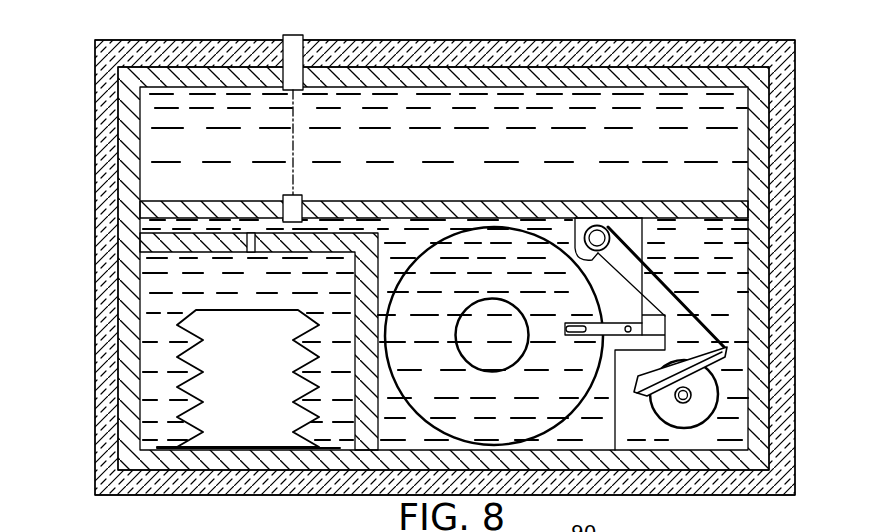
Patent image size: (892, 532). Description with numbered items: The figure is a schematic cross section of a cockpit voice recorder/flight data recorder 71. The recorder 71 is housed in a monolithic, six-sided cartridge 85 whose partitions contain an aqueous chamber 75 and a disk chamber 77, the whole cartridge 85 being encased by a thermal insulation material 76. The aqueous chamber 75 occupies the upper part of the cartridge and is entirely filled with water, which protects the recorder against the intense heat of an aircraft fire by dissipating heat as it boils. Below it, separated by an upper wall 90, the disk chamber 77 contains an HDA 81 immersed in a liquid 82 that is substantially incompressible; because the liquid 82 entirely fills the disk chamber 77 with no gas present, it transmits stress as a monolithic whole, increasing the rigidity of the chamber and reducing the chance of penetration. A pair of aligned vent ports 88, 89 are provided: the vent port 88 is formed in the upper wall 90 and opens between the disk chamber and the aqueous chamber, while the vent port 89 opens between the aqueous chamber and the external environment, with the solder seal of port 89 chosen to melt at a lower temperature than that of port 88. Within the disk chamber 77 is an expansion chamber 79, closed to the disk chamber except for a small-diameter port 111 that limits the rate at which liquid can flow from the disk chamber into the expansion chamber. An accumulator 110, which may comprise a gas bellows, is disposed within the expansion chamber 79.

The recorder 71 is at (93, 93).
The aqueous chamber 75 is at (153, 115).
The thermal insulation material 76 is at (98, 324).
The disk chamber 77 is at (727, 239).
The expansion chamber 79 is at (153, 288).
The HDA 81 is at (697, 300).
The liquid 82 is at (634, 239).
The monolithic cartridge 85 is at (755, 157).
The vent port 88 is at (301, 196).
The vent port 89 is at (293, 38).
The upper wall 90 is at (375, 209).
The accumulator 110 is at (181, 376).
The small-diameter port 111 is at (250, 238).